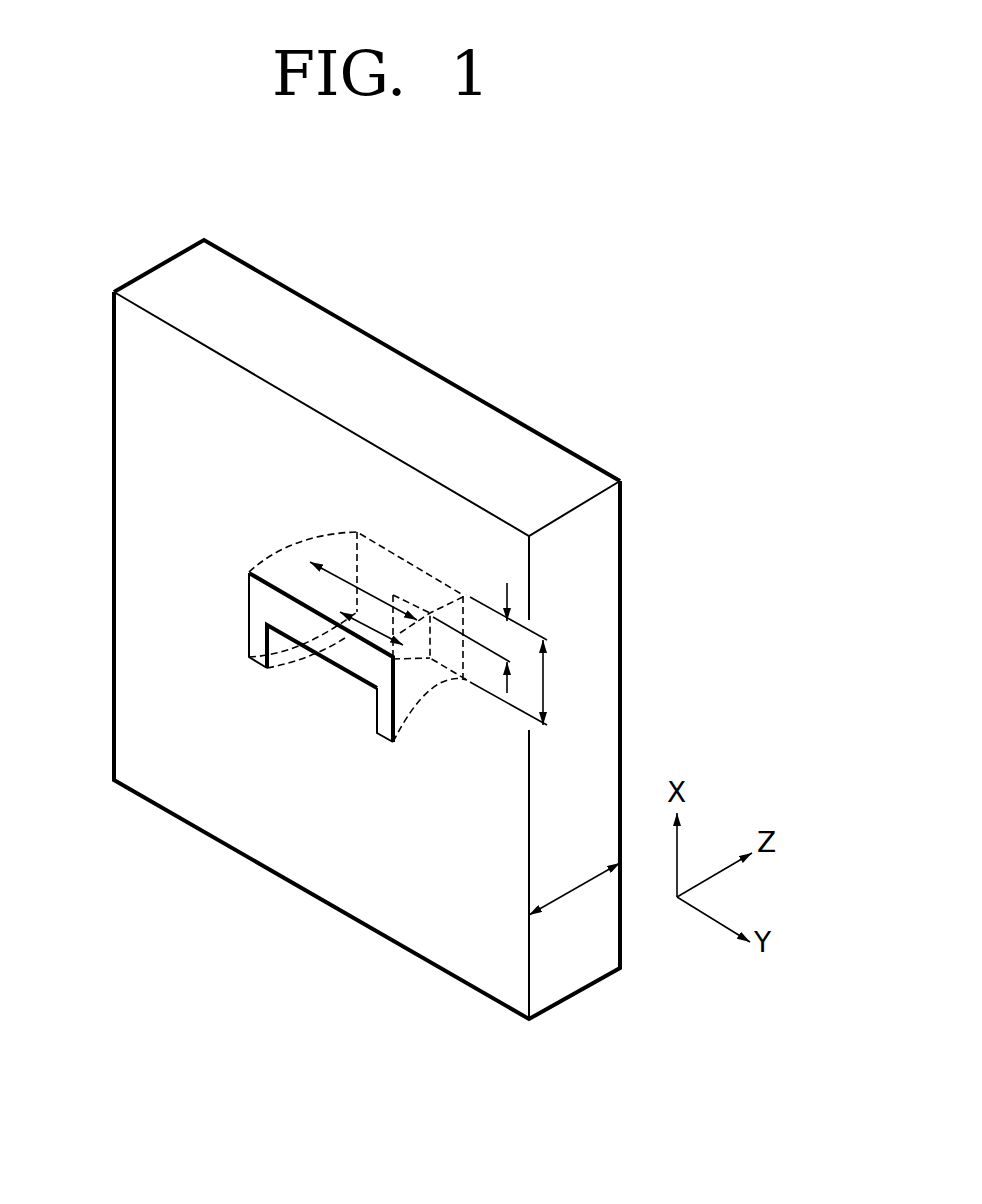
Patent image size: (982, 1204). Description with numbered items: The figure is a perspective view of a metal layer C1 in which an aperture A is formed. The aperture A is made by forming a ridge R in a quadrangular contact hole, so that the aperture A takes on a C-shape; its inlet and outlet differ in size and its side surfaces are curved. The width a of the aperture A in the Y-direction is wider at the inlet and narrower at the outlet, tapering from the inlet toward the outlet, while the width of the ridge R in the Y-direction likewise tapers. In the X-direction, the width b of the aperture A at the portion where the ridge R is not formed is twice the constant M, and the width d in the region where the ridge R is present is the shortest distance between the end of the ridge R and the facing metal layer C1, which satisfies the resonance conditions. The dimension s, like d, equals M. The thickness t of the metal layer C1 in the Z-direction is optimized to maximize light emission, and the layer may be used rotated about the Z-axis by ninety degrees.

The metal layer C1 is at (627, 412).
The aperture A is at (260, 612).
The ridge R is at (330, 675).
The width of the ridge s is at (367, 627).
The width of the aperture in the Y-direction a is at (363, 589).
The width of the aperture in the X-direction where the ridge is not formed b is at (508, 682).
The width of the aperture in the X-direction where the ridge is present d is at (490, 638).
The thickness of the metal layer t is at (574, 883).